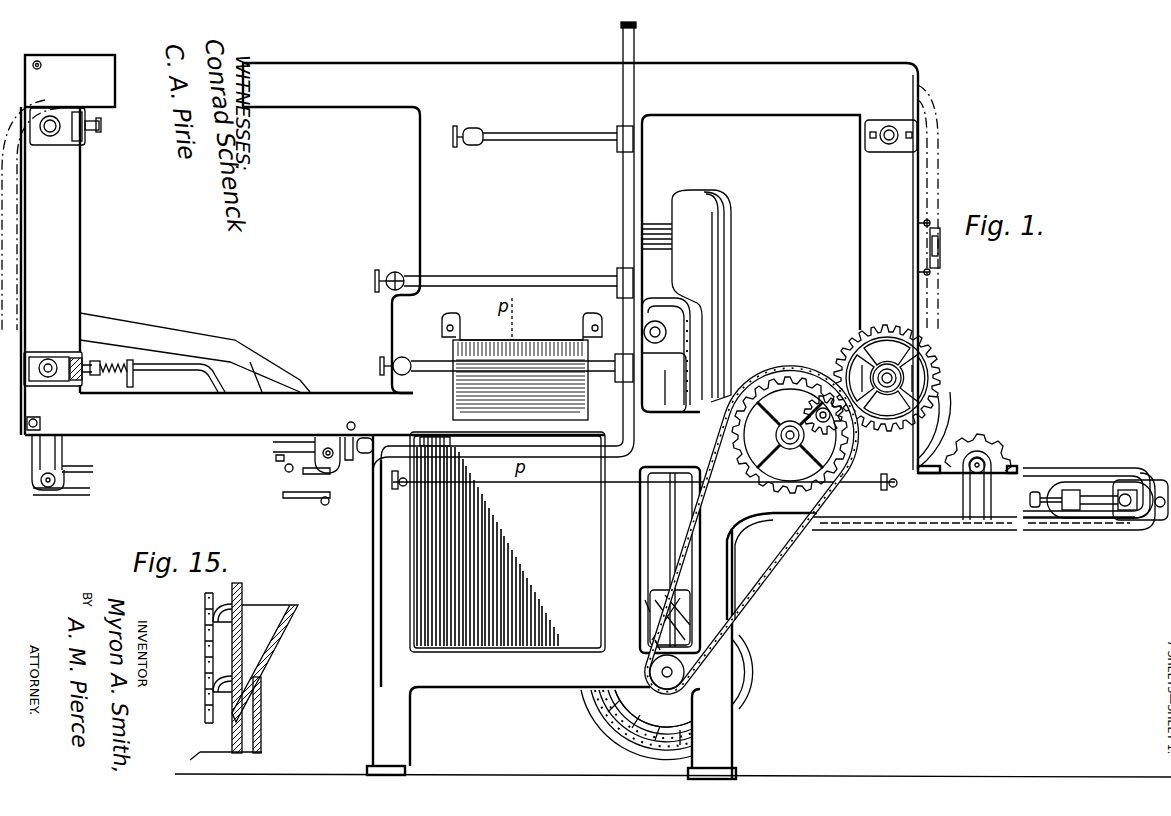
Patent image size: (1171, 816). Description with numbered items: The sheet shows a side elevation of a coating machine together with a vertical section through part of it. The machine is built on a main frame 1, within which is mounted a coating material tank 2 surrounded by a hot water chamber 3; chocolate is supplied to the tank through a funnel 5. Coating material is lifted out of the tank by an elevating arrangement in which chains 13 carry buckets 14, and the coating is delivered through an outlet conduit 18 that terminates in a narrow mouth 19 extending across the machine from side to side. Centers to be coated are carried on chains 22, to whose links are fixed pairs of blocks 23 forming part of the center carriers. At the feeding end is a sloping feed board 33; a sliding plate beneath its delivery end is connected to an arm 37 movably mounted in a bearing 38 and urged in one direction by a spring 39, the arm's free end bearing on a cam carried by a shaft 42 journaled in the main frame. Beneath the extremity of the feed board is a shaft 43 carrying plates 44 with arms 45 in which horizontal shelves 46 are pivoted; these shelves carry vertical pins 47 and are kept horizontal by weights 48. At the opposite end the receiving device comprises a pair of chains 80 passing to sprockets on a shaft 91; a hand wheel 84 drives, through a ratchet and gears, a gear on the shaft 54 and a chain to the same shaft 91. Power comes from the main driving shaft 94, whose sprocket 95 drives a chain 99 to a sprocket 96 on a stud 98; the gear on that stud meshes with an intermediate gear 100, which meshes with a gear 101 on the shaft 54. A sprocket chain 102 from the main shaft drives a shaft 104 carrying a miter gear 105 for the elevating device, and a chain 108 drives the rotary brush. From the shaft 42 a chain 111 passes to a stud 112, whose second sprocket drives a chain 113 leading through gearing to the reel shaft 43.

In FIG. 1, the main frame 1 is at (596, 417).
In FIG. 1, the funnel 5 is at (528, 340).
In FIG. 15, the funnel 5 is at (265, 663).
In FIG. 1, the outlet conduit 18 is at (686, 296).
In FIG. 1, the narrow mouth 19 is at (698, 407).
In FIG. 1, the chains 22 is at (940, 272).
In FIG. 1, the blocks 23 is at (918, 250).
In FIG. 1, the sloping feed board 33 is at (195, 345).
In FIG. 1, the arm 37 is at (182, 374).
In FIG. 1, the bearing 38 is at (132, 380).
In FIG. 1, the spring 39 is at (117, 373).
In FIG. 1, the shaft 42 is at (48, 362).
In FIG. 1, the shaft 43 is at (329, 448).
In FIG. 1, the plates 44 is at (313, 450).
In FIG. 1, the arms 45 is at (300, 464).
In FIG. 1, the horizontal shelves 46 is at (283, 458).
In FIG. 1, the vertical pins 47 is at (280, 454).
In FIG. 1, the weights 48 is at (325, 503).
In FIG. 1, the shaft 54 is at (883, 378).
In FIG. 1, the chains 80 is at (990, 512).
In FIG. 1, the hand wheel 84 is at (984, 407).
In FIG. 1, the shaft 91 is at (1123, 513).
In FIG. 1, the main driving shaft 94 is at (650, 672).
In FIG. 1, the sprocket 95 is at (648, 640).
In FIG. 1, the sprocket 96 is at (760, 493).
In FIG. 1, the stud 98 is at (782, 448).
In FIG. 1, the chain 99 is at (751, 530).
In FIG. 1, the intermediate gear 100 is at (811, 395).
In FIG. 1, the gear 101 is at (940, 362).
In FIG. 1, the sprocket chain 102 is at (688, 368).
In FIG. 1, the shaft 104 is at (655, 340).
In FIG. 1, the miter gear 105 is at (678, 400).
In FIG. 1, the chain 108 is at (623, 713).
In FIG. 1, the chain 111 is at (67, 448).
In FIG. 1, the stud 112 is at (80, 480).
In FIG. 1, the chain 113 is at (88, 493).
In FIG. 15, the coating material tank 2 is at (204, 741).
In FIG. 15, the hot water chamber 3 is at (245, 717).
In FIG. 15, the chains 13 is at (205, 645).
In FIG. 15, the buckets 14 is at (233, 617).